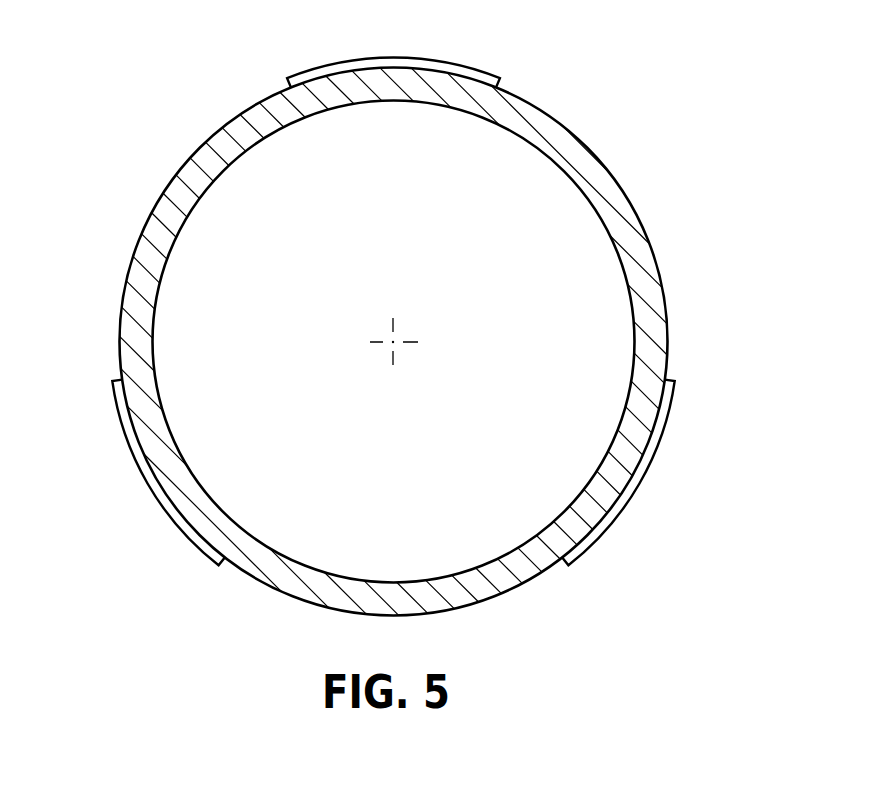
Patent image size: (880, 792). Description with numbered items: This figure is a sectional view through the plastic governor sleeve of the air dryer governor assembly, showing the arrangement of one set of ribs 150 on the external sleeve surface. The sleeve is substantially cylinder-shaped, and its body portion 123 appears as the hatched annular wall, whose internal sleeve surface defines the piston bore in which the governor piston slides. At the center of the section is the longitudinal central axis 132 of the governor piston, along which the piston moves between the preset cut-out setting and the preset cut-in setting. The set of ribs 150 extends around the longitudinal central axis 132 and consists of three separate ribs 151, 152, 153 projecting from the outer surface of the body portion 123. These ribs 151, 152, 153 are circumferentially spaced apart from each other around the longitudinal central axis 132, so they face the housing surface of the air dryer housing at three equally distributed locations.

The body portion 123 is at (574, 165).
The longitudinal central axis 132 is at (395, 338).
The set of ribs 150 is at (305, 60).
The rib 151 is at (403, 60).
The rib 152 is at (136, 466).
The rib 153 is at (645, 478).